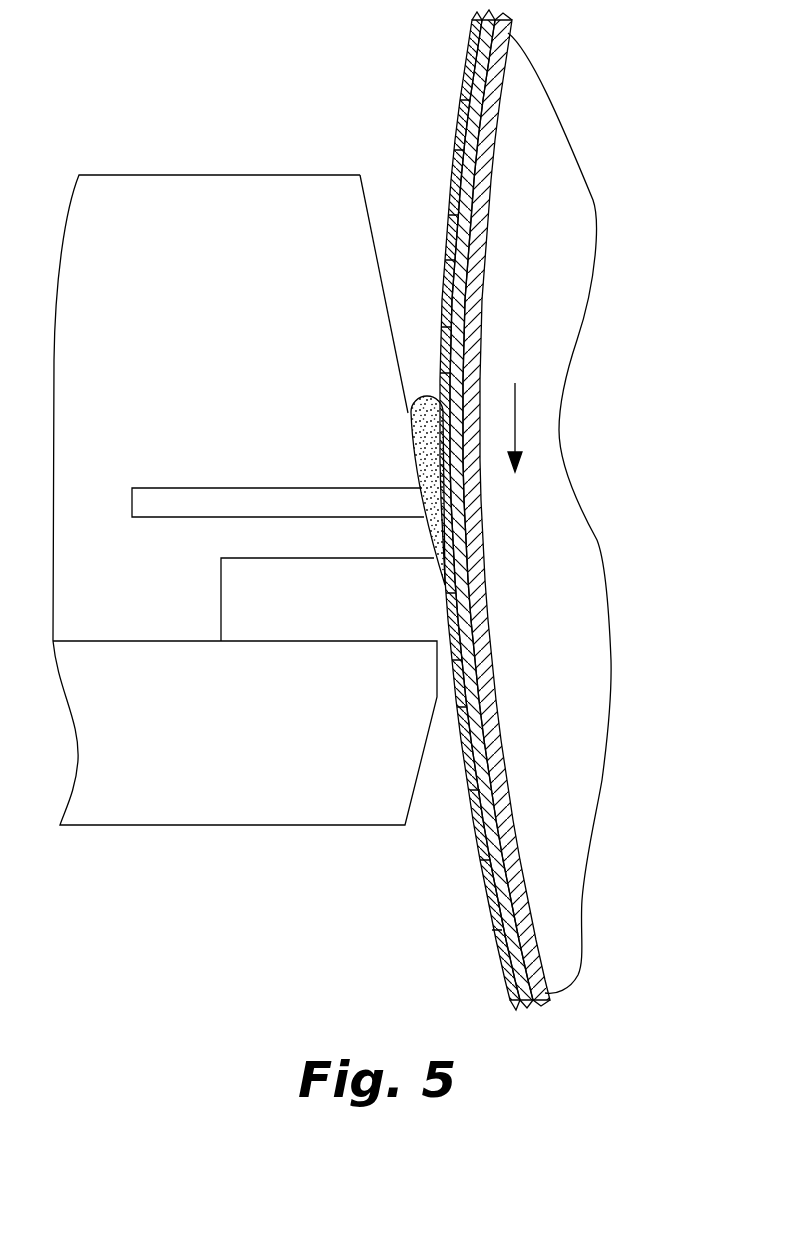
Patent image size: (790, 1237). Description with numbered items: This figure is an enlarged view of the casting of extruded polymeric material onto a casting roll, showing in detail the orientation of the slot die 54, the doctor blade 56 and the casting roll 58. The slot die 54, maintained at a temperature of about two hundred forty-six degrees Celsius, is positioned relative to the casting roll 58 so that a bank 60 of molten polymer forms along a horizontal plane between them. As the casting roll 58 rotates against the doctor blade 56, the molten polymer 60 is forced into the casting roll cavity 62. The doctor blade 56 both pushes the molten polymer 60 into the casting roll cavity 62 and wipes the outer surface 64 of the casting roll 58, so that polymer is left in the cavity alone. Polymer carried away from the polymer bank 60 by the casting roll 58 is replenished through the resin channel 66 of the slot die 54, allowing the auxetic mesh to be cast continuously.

The slot die 54 is at (168, 154).
The doctor blade 56 is at (352, 615).
The casting roll 58 is at (550, 260).
The bank of molten polymer 60 is at (420, 423).
The casting roll cavity 62 is at (457, 163).
The outer surface of the casting roll 64 is at (448, 237).
The resin channel 66 is at (193, 500).